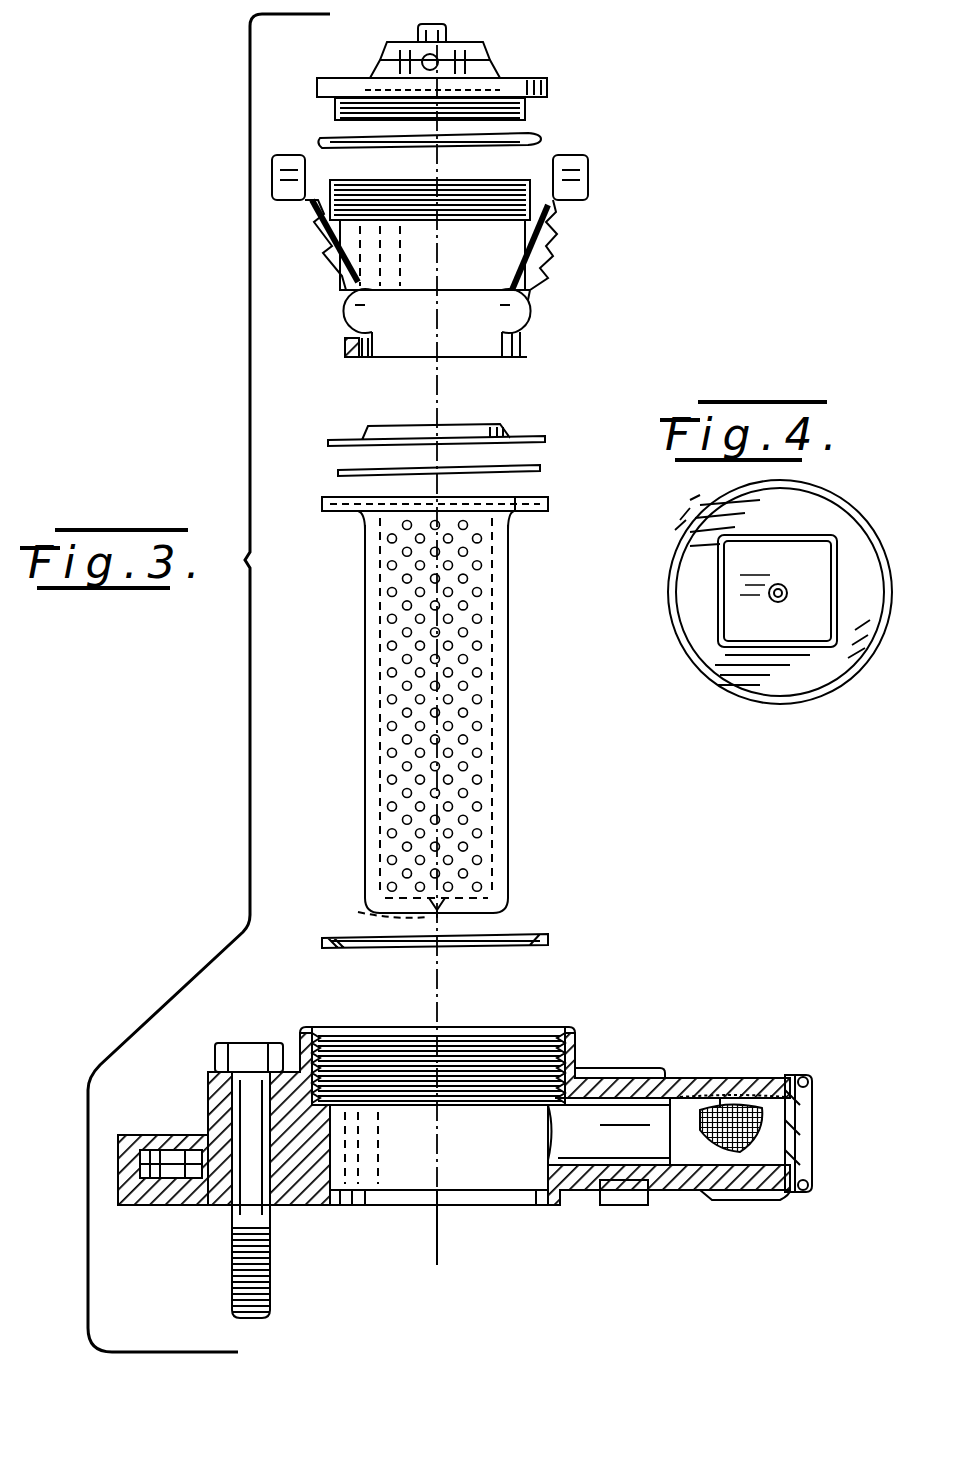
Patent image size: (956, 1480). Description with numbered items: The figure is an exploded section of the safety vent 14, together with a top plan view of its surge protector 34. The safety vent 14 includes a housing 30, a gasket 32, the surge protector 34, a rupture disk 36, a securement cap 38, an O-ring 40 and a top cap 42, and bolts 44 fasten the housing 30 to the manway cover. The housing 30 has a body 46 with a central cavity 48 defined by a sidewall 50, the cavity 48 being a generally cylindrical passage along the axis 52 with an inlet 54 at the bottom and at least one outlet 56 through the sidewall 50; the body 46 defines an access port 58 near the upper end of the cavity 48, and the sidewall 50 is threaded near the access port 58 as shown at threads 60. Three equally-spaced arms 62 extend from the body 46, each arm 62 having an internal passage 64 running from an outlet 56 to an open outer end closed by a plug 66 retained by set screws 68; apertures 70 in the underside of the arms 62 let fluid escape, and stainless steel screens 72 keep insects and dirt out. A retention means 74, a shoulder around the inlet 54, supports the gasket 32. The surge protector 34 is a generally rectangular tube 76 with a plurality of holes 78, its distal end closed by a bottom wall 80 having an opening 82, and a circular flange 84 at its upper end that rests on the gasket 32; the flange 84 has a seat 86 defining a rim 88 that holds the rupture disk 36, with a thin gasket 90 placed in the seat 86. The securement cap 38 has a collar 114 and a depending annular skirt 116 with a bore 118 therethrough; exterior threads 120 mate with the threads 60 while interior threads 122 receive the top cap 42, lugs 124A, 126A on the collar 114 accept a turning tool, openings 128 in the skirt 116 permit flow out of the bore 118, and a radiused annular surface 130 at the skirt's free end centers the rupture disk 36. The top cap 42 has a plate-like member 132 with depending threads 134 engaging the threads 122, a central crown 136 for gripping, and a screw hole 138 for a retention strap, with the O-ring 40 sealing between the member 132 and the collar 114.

In FIG. 3, the safety vent 14 is at (624, 1027).
In FIG. 3, the housing 30 is at (744, 1066).
In FIG. 3, the gasket 32 is at (550, 940).
In FIG. 3, the surge protector 34 is at (357, 706).
In FIG. 4, the surge protector 34 is at (740, 710).
In FIG. 3, the rupture disk 36 is at (333, 436).
In FIG. 3, the securement cap 38 is at (590, 214).
In FIG. 3, the O-ring 40 is at (540, 140).
In FIG. 3, the top cap 42 is at (561, 75).
In FIG. 3, the bolts 44 is at (240, 1276).
In FIG. 3, the body 46 is at (605, 1068).
In FIG. 3, the central cavity 48 is at (439, 1147).
In FIG. 3, the sidewall 50 is at (330, 1150).
In FIG. 3, the axis 52 is at (438, 1240).
In FIG. 3, the inlet 54 is at (416, 1200).
In FIG. 3, the outlet 56 is at (554, 1145).
In FIG. 3, the access port 58 is at (550, 1025).
In FIG. 3, the threads 60 is at (340, 1035).
In FIG. 3, the arms 62 is at (746, 1095).
In FIG. 3, the internal passage 64 is at (624, 1190).
In FIG. 3, the plug 66 is at (814, 1130).
In FIG. 3, the set screws 68 is at (810, 1080).
In FIG. 3, the apertures 70 is at (712, 1180).
In FIG. 3, the stainless steel screens 72 is at (718, 1098).
In FIG. 3, the retention means 74 is at (545, 1200).
In FIG. 3, the tube 76 is at (508, 750).
In FIG. 4, the tube 76 is at (838, 592).
In FIG. 3, the holes 78 is at (480, 712).
In FIG. 3, the bottom wall 80 is at (467, 915).
In FIG. 4, the bottom wall 80 is at (745, 608).
In FIG. 3, the opening 82 is at (371, 912).
In FIG. 4, the opening 82 is at (783, 588).
In FIG. 3, the flange 84 is at (345, 514).
In FIG. 4, the flange 84 is at (820, 500).
In FIG. 3, the seat 86 is at (530, 500).
In FIG. 4, the seat 86 is at (698, 655).
In FIG. 3, the rim 88 is at (330, 498).
In FIG. 4, the rim 88 is at (808, 696).
In FIG. 3, the thin gasket 90 is at (545, 466).
In FIG. 3, the collar 114 is at (310, 228).
In FIG. 3, the annular skirt 116 is at (455, 350).
In FIG. 3, the bore 118 is at (345, 280).
In FIG. 3, the exterior threads 120 is at (545, 250).
In FIG. 3, the interior threads 122 is at (388, 182).
In FIG. 3, the lug 124A is at (590, 180).
In FIG. 3, the lug 126A is at (288, 155).
In FIG. 3, the openings 128 is at (508, 327).
In FIG. 3, the radiused annular surface 130 is at (356, 358).
In FIG. 3, the plate-like member 132 is at (326, 80).
In FIG. 3, the threads 134 is at (528, 112).
In FIG. 3, the central crown 136 is at (483, 44).
In FIG. 3, the screw hole 138 is at (450, 22).